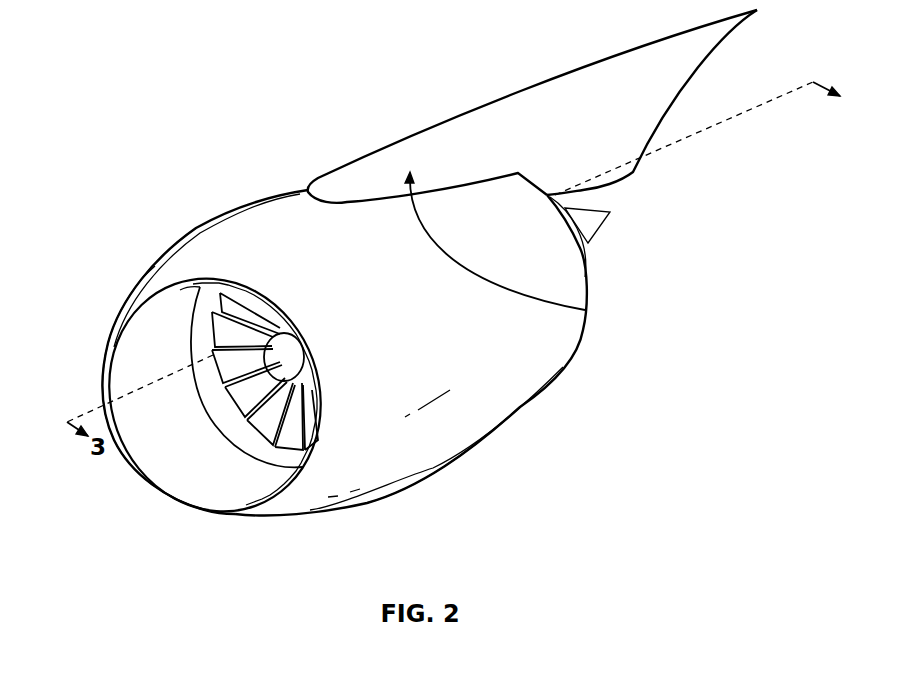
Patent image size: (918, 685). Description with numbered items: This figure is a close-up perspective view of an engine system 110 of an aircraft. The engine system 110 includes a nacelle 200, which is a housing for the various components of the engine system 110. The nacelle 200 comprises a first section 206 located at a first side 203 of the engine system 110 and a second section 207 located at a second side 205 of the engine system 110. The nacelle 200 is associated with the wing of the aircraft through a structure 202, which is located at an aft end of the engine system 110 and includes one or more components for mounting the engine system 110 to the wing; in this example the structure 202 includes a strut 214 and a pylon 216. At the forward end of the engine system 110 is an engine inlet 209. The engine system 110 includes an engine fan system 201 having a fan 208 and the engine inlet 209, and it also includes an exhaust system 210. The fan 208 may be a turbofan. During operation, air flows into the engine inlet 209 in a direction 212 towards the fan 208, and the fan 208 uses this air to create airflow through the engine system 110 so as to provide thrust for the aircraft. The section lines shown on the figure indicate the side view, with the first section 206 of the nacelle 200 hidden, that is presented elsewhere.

The engine system 110 is at (400, 107).
The nacelle 200 is at (133, 280).
The engine fan system 201 is at (257, 493).
The structure 202 is at (378, 173).
The first side 203 is at (253, 217).
The second side 205 is at (362, 473).
The first section 206 is at (108, 381).
The second section 207 is at (307, 515).
The fan 208 is at (211, 322).
The engine inlet 209 is at (165, 447).
The exhaust system 210 is at (600, 250).
The direction 212 is at (200, 465).
The strut 214 is at (585, 310).
The pylon 216 is at (643, 67).